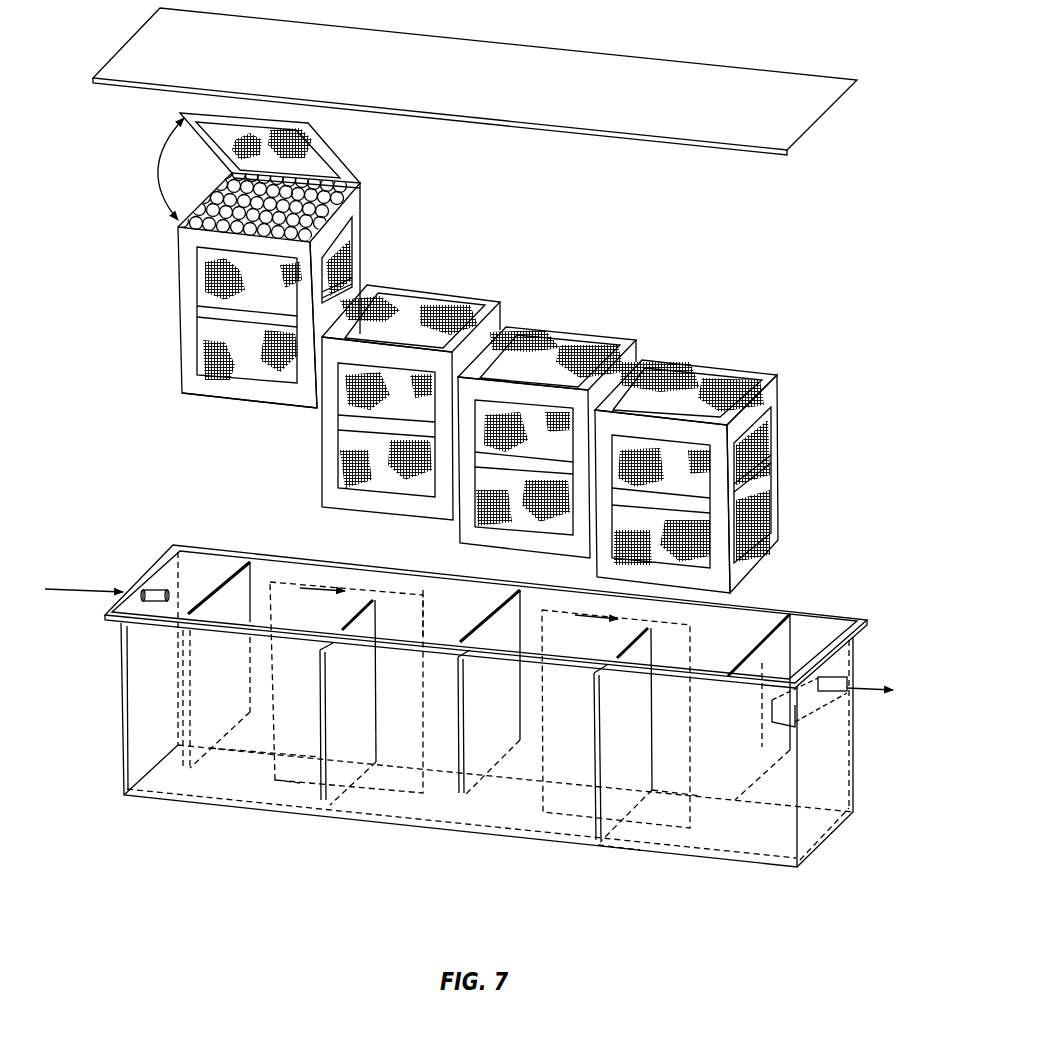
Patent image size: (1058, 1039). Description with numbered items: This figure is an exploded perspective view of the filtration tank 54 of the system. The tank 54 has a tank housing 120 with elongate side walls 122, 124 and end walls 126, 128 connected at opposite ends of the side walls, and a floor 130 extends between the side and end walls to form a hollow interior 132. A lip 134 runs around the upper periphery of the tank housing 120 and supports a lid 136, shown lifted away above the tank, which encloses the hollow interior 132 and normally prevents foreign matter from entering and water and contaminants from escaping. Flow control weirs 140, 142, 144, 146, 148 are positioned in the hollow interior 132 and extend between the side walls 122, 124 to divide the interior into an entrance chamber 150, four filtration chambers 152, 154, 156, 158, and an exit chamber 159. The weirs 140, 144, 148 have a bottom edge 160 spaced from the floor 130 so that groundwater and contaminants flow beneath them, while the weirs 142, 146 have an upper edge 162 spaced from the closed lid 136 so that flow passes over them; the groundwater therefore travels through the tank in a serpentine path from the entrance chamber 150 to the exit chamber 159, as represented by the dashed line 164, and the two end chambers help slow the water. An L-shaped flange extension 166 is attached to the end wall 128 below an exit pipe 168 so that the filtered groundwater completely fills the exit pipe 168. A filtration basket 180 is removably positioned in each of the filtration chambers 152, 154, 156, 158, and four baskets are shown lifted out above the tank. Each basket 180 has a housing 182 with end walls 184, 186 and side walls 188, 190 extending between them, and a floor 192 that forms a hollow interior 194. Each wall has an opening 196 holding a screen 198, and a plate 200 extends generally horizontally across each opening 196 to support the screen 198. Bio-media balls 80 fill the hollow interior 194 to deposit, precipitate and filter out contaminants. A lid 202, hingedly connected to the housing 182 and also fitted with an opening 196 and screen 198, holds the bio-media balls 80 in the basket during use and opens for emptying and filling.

The tank 54 is at (808, 562).
The bio-media balls 80 is at (322, 187).
The tank housing 120 is at (213, 812).
The side wall 122 is at (625, 835).
The side wall 124 is at (723, 628).
The end wall 126 is at (120, 703).
The end wall 128 is at (837, 787).
The floor 130 is at (370, 802).
The hollow interior 132 is at (818, 628).
The lip 134 is at (152, 586).
The lid 136 is at (487, 52).
The flow control weir 140 is at (230, 600).
The flow control weir 142 is at (337, 773).
The flow control weir 144 is at (450, 772).
The flow control weir 146 is at (590, 790).
The flow control weir 148 is at (743, 843).
The entrance chamber 150 is at (138, 760).
The filtration chamber 152 is at (307, 775).
The filtration chamber 154 is at (392, 792).
The filtration chamber 156 is at (538, 812).
The filtration chamber 158 is at (650, 820).
The exit chamber 159 is at (748, 815).
The bottom edge 160 is at (197, 763).
The upper edge 162 is at (353, 612).
The dashed line 164 is at (323, 582).
The L-shaped flange extension 166 is at (853, 647).
The exit pipe 168 is at (847, 693).
The filtration basket 180 is at (133, 272).
The housing 182 is at (182, 362).
The end wall 184 is at (203, 203).
The end wall 186 is at (362, 205).
The side wall 188 is at (213, 383).
The side wall 190 is at (302, 190).
The floor 192 is at (305, 408).
The hollow interior 194 is at (186, 222).
The opening 196 is at (302, 175).
The screen 198 is at (260, 148).
The plate 200 is at (215, 312).
The lid 202 is at (176, 113).